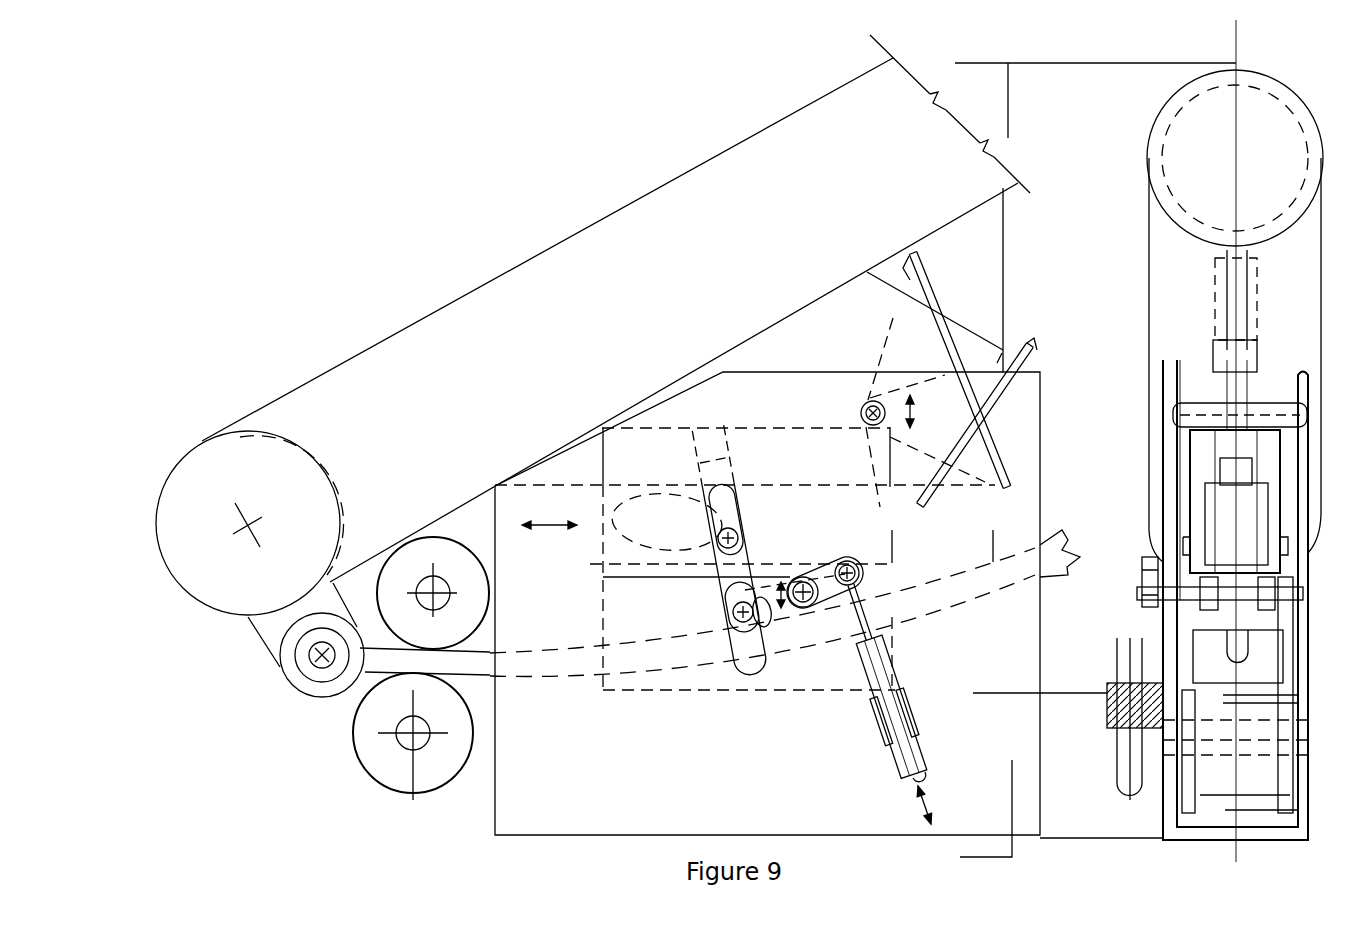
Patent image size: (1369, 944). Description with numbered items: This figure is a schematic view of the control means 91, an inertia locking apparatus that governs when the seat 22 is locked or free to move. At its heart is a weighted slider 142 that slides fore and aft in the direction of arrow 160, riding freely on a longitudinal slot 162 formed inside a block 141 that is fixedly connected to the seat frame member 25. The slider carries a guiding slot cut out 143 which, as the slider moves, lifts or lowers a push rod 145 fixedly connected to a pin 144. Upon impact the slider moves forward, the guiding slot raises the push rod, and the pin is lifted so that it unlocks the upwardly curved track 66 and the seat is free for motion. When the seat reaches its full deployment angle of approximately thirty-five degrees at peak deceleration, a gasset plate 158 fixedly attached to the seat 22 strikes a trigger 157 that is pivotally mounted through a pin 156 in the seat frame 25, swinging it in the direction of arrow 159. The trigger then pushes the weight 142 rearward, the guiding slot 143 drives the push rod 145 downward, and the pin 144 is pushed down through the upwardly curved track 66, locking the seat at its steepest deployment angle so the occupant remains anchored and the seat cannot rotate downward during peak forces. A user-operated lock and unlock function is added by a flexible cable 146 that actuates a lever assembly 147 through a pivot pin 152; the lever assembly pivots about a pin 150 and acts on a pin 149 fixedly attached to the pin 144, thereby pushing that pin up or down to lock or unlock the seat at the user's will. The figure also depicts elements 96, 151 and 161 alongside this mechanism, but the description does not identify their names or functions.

The seat 22 is at (457, 305).
The seat frame member 25 is at (495, 808).
The upwardly curved track 66 is at (960, 602).
The control means 91 is at (805, 357).
The roller 96 is at (352, 748).
The block 141 is at (720, 690).
The weighted slider 142 is at (570, 566).
The guiding slot cut out 143 is at (638, 532).
The pin 144 is at (728, 592).
The push rod 145 is at (738, 537).
The flexible cable 146 is at (838, 550).
The lever assembly 147 is at (851, 565).
The pin 149 is at (733, 613).
The pin 150 is at (797, 576).
The actuator cylinder 151 is at (922, 757).
The pivot pin 152 is at (912, 590).
The pin 156 is at (866, 405).
The trigger 157 is at (1213, 358).
The gasset plate 158 is at (1005, 238).
The arrow 159 is at (914, 410).
The arrow 160 is at (548, 530).
The roller 161 is at (318, 668).
The longitudinal slot 162 is at (790, 482).